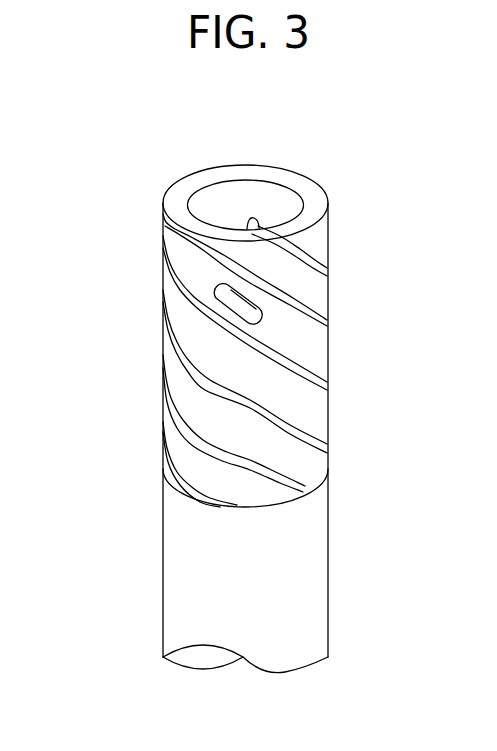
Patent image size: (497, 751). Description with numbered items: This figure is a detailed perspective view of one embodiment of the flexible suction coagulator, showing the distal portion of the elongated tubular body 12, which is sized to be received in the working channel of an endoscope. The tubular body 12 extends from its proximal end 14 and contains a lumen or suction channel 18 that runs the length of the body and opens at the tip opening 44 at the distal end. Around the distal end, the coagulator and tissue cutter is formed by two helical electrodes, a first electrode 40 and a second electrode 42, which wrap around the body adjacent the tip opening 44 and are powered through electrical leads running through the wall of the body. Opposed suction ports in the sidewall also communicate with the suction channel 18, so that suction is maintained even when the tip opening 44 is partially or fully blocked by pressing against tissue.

The elongated tubular body 12 is at (303, 563).
The proximal end 14 is at (162, 523).
The suction channel 18 is at (228, 200).
The tip opening 44 is at (297, 212).
The first electrode 40 is at (172, 455).
The second electrode 42 is at (186, 411).